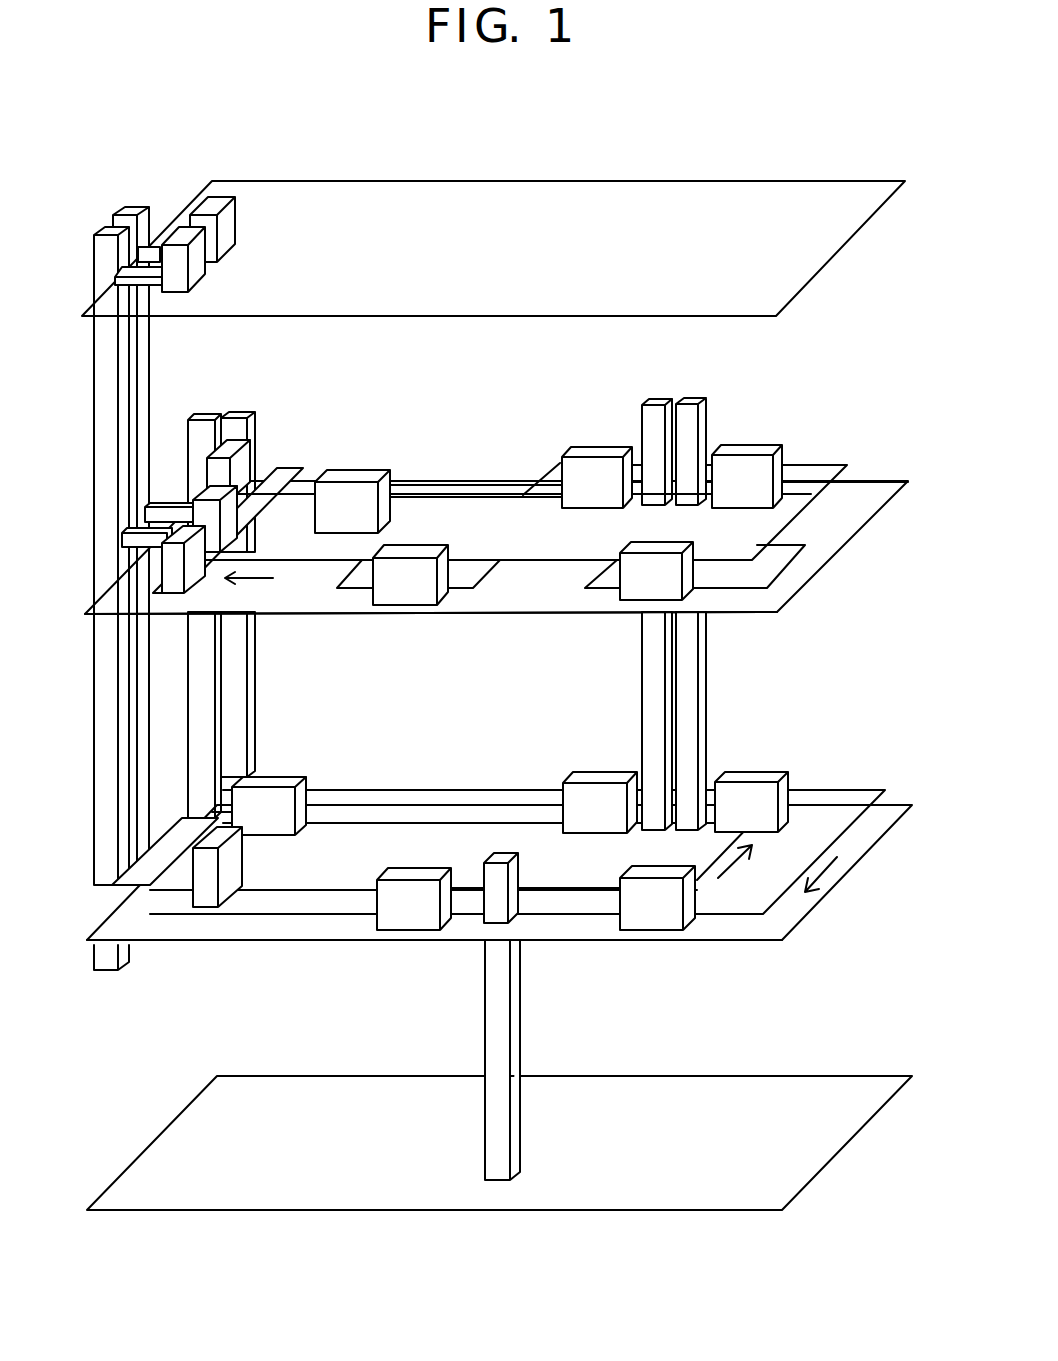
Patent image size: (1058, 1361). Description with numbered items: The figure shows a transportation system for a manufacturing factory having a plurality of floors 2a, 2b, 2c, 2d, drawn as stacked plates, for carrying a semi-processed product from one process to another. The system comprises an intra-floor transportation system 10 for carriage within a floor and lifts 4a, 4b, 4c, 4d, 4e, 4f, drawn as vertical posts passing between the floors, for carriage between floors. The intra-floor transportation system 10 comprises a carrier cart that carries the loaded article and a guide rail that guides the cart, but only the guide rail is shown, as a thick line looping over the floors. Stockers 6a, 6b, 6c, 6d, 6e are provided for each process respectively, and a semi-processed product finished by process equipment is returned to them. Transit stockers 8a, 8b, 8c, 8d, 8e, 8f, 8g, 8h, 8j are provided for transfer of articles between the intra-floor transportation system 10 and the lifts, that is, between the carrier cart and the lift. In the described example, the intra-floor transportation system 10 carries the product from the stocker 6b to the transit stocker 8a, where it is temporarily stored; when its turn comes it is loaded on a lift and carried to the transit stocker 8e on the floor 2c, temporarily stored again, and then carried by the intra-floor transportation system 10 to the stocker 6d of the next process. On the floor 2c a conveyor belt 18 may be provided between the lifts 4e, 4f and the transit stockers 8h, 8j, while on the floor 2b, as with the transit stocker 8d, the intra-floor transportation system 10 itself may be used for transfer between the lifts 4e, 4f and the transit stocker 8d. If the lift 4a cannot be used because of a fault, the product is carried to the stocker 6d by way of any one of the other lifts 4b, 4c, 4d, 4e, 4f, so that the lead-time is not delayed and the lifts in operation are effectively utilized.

The floor 2a is at (628, 1185).
The floor 2b is at (780, 918).
The floor 2c is at (845, 487).
The floor 2d is at (688, 203).
The lift 4a is at (687, 717).
The lift 4b is at (648, 720).
The lift 4c is at (232, 730).
The lift 4d is at (200, 420).
The lift 4e is at (126, 208).
The lift 4f is at (100, 228).
The stocker 6a is at (663, 917).
The stocker 6b is at (418, 918).
The stocker 6c is at (637, 595).
The stocker 6d is at (415, 548).
The stocker 6e is at (353, 477).
The transit stocker 8a is at (750, 773).
The transit stocker 8b is at (603, 777).
The transit stocker 8c is at (282, 810).
The transit stocker 8d is at (208, 877).
The transit stocker 8e is at (737, 450).
The transit stocker 8f is at (595, 452).
The transit stocker 8g is at (247, 462).
The transit stocker 8h is at (230, 530).
The transit stocker 8j is at (202, 553).
The intra-floor transportation system 10 is at (792, 522).
The conveyor belt 18 is at (173, 513).